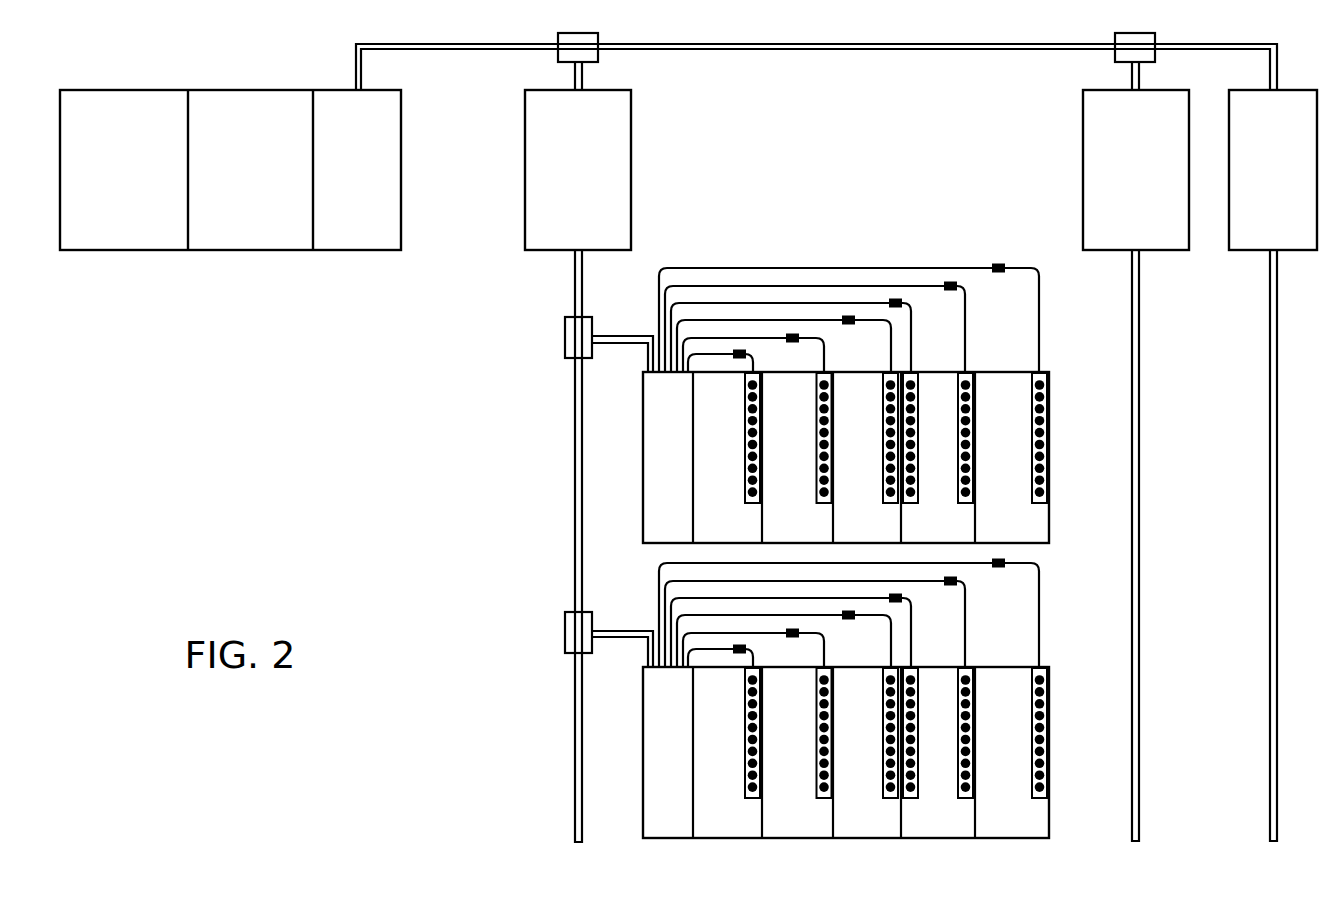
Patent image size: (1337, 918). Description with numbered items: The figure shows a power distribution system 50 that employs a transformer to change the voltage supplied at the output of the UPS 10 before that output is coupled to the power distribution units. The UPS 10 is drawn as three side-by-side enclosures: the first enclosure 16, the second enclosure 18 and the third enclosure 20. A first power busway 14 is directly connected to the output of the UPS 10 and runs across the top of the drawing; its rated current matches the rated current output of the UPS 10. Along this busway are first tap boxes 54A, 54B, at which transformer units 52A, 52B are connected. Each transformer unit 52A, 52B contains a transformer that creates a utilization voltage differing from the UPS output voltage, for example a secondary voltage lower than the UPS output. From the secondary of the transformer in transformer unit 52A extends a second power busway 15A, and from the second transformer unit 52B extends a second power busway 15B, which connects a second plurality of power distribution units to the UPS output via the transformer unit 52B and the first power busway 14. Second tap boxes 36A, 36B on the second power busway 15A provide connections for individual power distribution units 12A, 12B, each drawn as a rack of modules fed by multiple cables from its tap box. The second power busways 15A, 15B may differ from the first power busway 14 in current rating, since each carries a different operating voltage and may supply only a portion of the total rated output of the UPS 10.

The UPS 10 is at (230, 190).
The first enclosure 16 is at (130, 90).
The second enclosure 18 is at (250, 90).
The third enclosure 20 is at (331, 90).
The first power busway 14 is at (470, 50).
The first tap box 54A is at (598, 60).
The first tap box 54B is at (1120, 60).
The transformer unit 52A is at (631, 164).
The transformer unit 52B is at (1084, 164).
The second power busway 15A is at (576, 276).
The second power busway 15B is at (1141, 350).
The second tap box 36A is at (565, 340).
The second tap box 36B is at (565, 635).
The power distribution unit 12A is at (636, 480).
The power distribution unit 12B is at (636, 773).
The power distribution system 50 is at (724, 546).